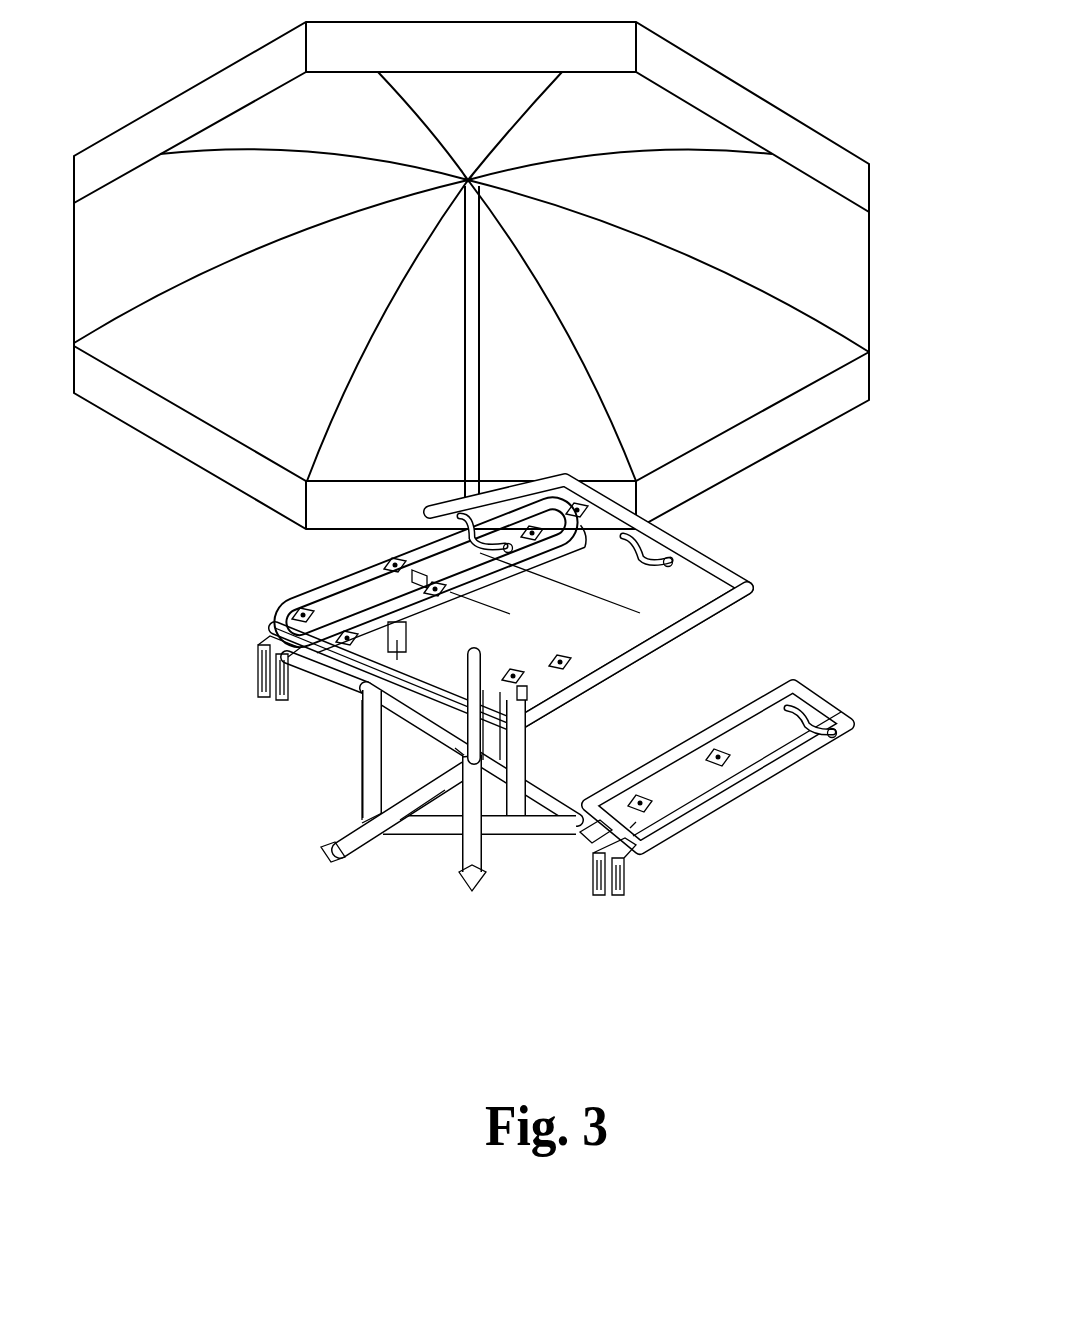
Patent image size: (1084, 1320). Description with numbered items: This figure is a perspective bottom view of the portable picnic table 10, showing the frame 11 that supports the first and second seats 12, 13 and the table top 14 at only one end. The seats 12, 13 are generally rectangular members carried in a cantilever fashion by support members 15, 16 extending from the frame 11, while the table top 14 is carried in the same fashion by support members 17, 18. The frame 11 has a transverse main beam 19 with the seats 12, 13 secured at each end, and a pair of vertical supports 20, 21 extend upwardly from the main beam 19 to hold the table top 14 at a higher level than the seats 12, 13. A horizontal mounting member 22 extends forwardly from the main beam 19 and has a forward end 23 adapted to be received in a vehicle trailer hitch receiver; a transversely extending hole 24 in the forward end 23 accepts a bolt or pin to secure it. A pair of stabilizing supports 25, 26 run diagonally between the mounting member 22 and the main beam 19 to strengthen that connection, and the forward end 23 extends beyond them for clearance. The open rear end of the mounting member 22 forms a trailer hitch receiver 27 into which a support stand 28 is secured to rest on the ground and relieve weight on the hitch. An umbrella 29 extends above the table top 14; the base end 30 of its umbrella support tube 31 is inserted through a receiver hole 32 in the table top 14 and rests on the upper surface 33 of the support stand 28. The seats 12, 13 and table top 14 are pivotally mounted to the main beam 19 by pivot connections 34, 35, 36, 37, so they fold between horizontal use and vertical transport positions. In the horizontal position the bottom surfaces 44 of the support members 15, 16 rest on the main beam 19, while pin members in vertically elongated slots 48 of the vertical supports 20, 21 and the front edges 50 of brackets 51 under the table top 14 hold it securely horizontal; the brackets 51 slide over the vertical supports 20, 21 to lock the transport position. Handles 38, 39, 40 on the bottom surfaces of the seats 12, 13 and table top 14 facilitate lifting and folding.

The portable picnic table 10 is at (245, 930).
The frame 11 is at (308, 712).
The first seat 12 is at (771, 691).
The second seat 13 is at (337, 578).
The table top 14 is at (720, 567).
The support member 15 is at (727, 792).
The support member 16 is at (345, 608).
The support member 17 is at (692, 613).
The support member 18 is at (518, 560).
The transverse main beam 19 is at (587, 833).
The vertical support 20 is at (520, 758).
The vertical support 21 is at (320, 700).
The horizontal mounting member 22 is at (362, 790).
The forward end 23 is at (322, 843).
The transversely extending hole 24 is at (373, 836).
The stabilizing support 25 is at (437, 828).
The stabilizing support 26 is at (385, 793).
The trailer hitch receiver 27 is at (440, 777).
The support stand 28 is at (481, 838).
The umbrella 29 is at (856, 248).
The base end 30 is at (546, 728).
The umbrella support tube 31 is at (478, 372).
The receiver hole 32 is at (468, 650).
The upper surface 33 is at (463, 752).
The pivot connection 34 is at (625, 878).
The pivot connection 35 is at (260, 664).
The pivot connection 36 is at (545, 702).
The pivot connection 37 is at (330, 592).
The handle 38 is at (820, 712).
The handle 39 is at (454, 528).
The handle 40 is at (672, 535).
The bottom surface 44 is at (266, 645).
The vertically elongated slot 48 is at (407, 655).
The front edge 50 is at (486, 708).
The bracket 51 is at (560, 659).